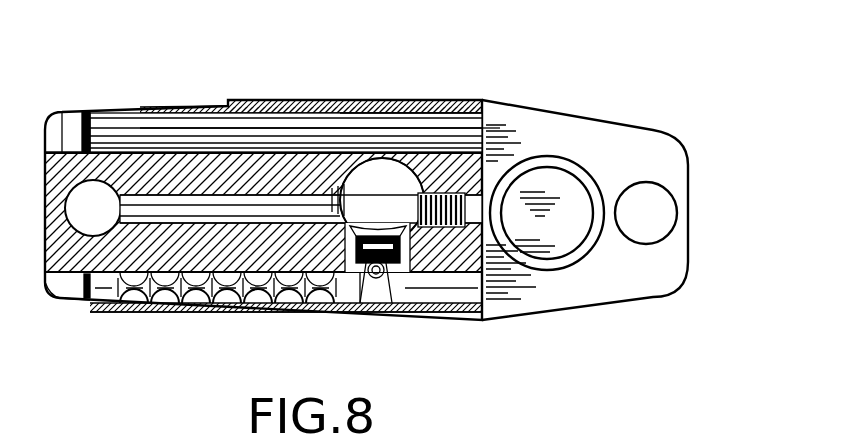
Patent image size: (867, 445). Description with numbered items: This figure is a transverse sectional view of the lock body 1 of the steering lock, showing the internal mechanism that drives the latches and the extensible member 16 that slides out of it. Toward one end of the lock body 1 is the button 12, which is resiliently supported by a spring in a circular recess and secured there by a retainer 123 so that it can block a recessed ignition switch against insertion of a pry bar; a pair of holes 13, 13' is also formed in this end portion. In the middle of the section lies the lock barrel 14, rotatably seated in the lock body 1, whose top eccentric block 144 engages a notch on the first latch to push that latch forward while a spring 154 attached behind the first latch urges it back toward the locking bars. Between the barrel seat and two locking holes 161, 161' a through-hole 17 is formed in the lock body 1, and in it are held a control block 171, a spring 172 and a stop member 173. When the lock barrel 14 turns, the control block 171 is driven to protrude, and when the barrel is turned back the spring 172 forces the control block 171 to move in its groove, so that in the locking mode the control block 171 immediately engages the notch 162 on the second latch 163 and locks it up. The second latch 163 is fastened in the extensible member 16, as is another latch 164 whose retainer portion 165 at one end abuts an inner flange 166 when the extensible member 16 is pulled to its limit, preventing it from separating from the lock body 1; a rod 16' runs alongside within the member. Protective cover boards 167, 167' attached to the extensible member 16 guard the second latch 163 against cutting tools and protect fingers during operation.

The lock body 1 is at (452, 100).
The button 12 is at (552, 187).
The retainer 123 is at (576, 172).
The transverse bore 13 is at (84, 271).
The plate hole 13' is at (646, 267).
The lock barrel 14 is at (383, 178).
The eccentric block 144 is at (392, 205).
The spring 154 is at (497, 135).
The extensible member 16 is at (585, 193).
The rod 16' is at (311, 83).
The locking hole 161 is at (92, 327).
The locking hole 161' is at (142, 79).
The notch 162 is at (142, 106).
The second latch 163 is at (260, 293).
The latch 164 is at (188, 133).
The retainer portion 165 is at (86, 112).
The inner flange 166 is at (347, 110).
The protective cover board 167 is at (355, 51).
The protective cover board 167' is at (286, 348).
The through-hole 17 is at (402, 260).
The control block 171 is at (373, 278).
The spring 172 is at (373, 280).
The stop member 173 is at (422, 247).